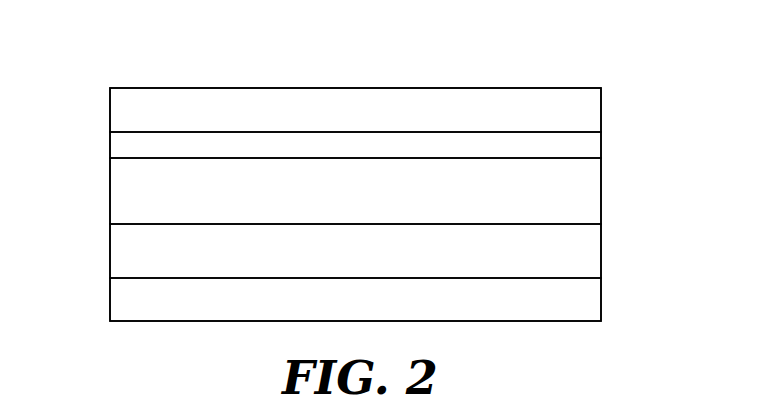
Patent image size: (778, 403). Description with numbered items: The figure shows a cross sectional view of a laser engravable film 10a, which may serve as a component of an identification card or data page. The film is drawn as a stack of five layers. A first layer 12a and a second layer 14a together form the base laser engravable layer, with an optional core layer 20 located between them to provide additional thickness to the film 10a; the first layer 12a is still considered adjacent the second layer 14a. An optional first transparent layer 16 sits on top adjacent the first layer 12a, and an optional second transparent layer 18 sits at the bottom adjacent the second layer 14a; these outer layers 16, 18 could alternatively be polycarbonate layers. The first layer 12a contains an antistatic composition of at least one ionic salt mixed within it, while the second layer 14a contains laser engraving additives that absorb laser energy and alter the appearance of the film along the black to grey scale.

The laser engravable film 10a is at (137, 62).
The first transparent layer 16 is at (601, 111).
The first layer 12a is at (601, 143).
The core layer 20 is at (601, 197).
The second layer 14a is at (601, 252).
The second transparent layer 18 is at (601, 298).